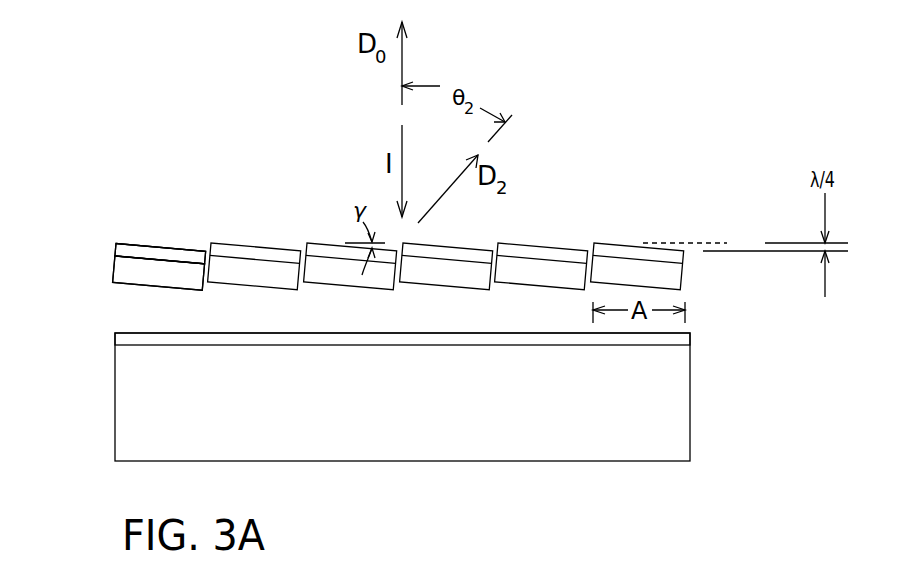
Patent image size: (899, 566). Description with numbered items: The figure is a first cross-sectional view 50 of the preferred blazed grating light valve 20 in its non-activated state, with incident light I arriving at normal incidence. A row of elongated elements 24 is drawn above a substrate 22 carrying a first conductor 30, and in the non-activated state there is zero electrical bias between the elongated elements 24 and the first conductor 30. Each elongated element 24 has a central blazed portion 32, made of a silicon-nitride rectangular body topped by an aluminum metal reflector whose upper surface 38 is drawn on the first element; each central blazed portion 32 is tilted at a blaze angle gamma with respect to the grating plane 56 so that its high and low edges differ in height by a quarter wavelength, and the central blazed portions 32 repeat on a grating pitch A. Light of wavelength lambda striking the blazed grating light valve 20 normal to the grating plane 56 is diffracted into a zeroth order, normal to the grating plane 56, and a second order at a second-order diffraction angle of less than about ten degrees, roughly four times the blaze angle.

The blazed grating light valve 20 is at (107, 193).
The first cross-sectional view 50 is at (147, 172).
The elongated elements 24 is at (115, 270).
The top reflective surface 38 is at (152, 245).
The central blazed portions 32 is at (248, 243).
The grating plane 56 is at (727, 243).
The first conductor 30 is at (115, 342).
The substrate 22 is at (428, 417).